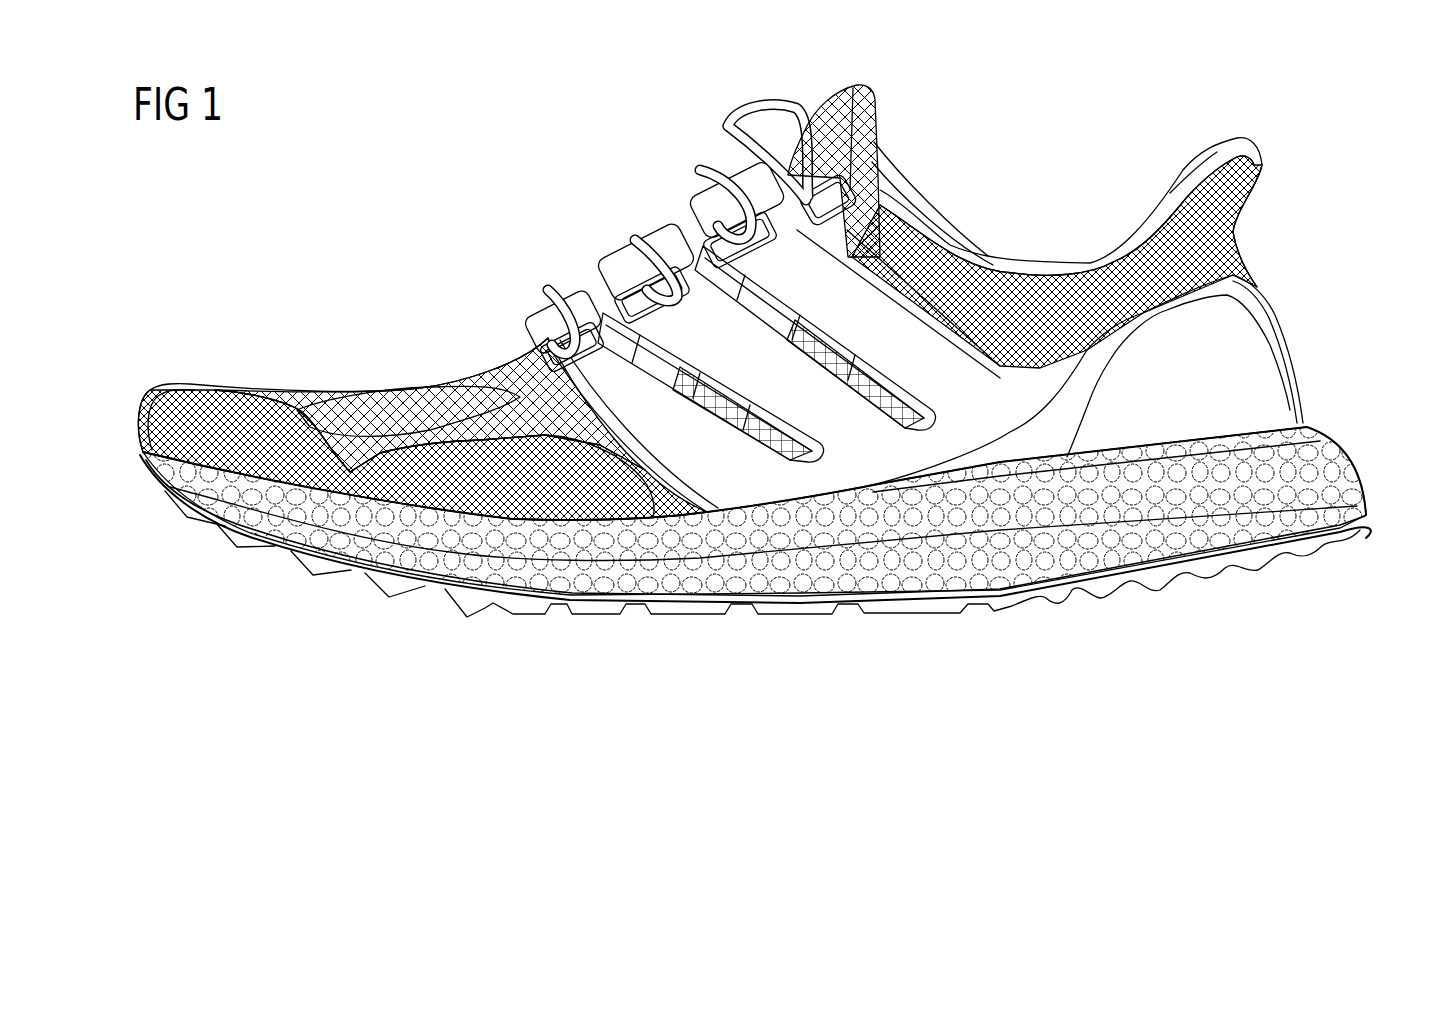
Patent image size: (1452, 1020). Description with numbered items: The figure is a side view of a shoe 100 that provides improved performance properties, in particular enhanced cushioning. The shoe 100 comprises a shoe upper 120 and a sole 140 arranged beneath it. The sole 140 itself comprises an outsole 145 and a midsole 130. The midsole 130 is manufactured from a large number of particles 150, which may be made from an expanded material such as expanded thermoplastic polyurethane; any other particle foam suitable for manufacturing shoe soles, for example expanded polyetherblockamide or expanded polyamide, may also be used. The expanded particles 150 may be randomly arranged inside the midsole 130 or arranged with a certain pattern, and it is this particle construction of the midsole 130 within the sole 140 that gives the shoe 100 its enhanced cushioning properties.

The shoe 100 is at (524, 168).
The shoe upper 120 is at (215, 408).
The midsole 130 is at (791, 538).
The sole 140 is at (1078, 590).
The outsole 145 is at (1203, 584).
The particles 150 is at (860, 563).